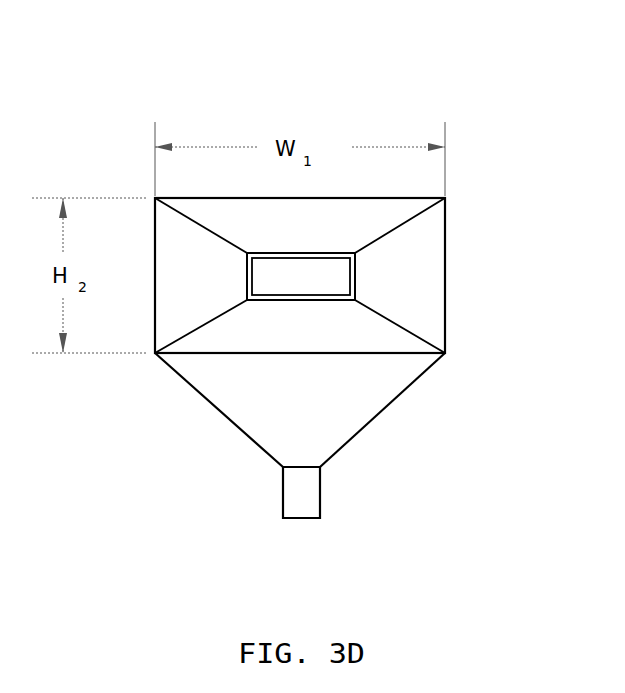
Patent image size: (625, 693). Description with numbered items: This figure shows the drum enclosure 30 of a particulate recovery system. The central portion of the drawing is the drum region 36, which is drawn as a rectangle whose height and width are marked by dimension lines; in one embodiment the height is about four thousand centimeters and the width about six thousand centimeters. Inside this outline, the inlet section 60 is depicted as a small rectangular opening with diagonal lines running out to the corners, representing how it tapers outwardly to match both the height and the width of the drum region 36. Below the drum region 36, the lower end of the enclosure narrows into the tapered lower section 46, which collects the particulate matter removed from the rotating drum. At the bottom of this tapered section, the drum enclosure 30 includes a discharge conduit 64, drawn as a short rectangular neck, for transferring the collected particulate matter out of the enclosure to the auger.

The drum enclosure 30 is at (478, 144).
The drum region 36 is at (445, 265).
The inlet section 60 is at (412, 303).
The tapered lower section 46 is at (312, 414).
The discharge conduit 64 is at (298, 493).